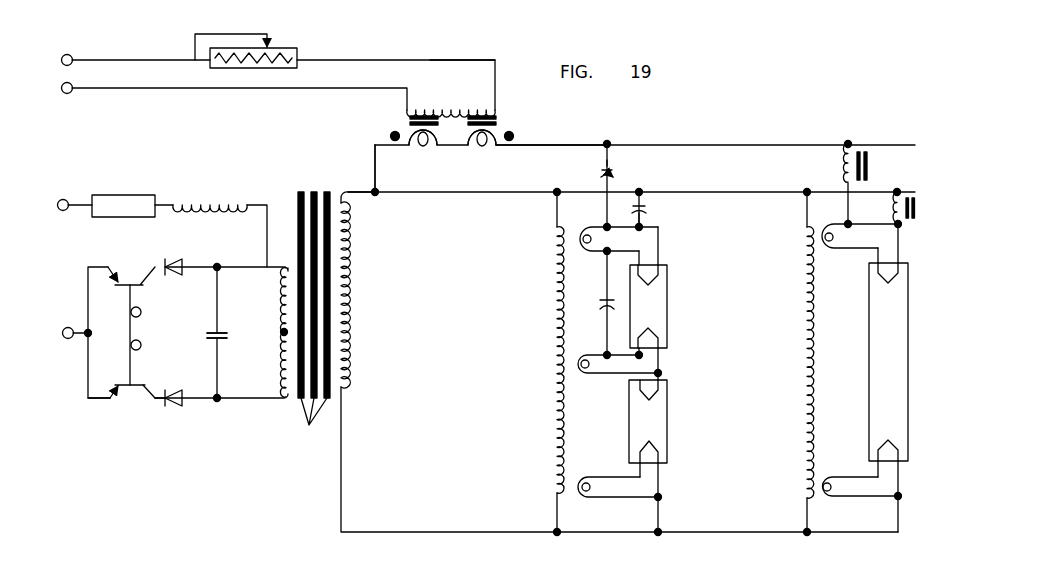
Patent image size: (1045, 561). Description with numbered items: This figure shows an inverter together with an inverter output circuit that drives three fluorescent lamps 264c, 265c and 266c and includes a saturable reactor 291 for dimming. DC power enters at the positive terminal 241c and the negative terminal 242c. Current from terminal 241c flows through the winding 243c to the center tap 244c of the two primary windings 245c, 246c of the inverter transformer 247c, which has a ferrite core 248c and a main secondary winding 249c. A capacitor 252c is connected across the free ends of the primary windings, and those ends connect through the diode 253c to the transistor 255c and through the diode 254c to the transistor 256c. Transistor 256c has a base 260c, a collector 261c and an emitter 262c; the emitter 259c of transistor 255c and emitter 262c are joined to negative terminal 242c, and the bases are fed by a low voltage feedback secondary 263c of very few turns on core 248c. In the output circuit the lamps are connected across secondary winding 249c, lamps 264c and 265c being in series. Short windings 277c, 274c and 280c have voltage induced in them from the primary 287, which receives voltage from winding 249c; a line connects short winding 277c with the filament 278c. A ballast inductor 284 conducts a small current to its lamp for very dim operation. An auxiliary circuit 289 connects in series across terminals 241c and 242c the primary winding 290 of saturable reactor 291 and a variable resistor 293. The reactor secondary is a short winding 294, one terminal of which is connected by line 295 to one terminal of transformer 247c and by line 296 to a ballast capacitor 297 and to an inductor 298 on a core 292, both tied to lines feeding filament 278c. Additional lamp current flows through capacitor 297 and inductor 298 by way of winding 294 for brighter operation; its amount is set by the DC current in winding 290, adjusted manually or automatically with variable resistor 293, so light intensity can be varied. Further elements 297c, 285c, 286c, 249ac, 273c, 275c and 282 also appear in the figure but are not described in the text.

The positive DC terminal 241c is at (70, 55).
The negative DC terminal 242c is at (70, 93).
The variable resistor 293 is at (272, 48).
The auxiliary circuit 289 is at (457, 52).
The primary winding of saturable reactor 290 is at (465, 102).
The saturable reactor 291 is at (512, 118).
The core 292 is at (517, 130).
The short winding 294 is at (481, 150).
The line 296 is at (533, 148).
The line 295 is at (377, 176).
The ballast capacitor 297 is at (614, 172).
The capacitor 297c is at (645, 206).
The ballast inductor 298 is at (845, 166).
The ballast inductor 284 is at (895, 212).
The short winding 277c is at (833, 237).
The fluorescent lamp 266c is at (869, 332).
The filament 278c is at (879, 282).
The electrode 275c is at (877, 440).
The short winding 274c is at (831, 487).
The winding 249ac is at (804, 350).
The heater 286c is at (591, 239).
The primary winding 287 is at (556, 245).
The capacitor 285c is at (600, 305).
The fluorescent lamp 264c is at (667, 312).
The electrode 273c is at (661, 392).
The fluorescent lamp 265c is at (667, 428).
The electrode 282 is at (661, 445).
The short winding 280c is at (591, 487).
The secondary winding 249c is at (350, 232).
The inverter transformer 247c is at (320, 184).
The ferrite core 248c is at (309, 426).
The primary winding 245c is at (288, 266).
The primary winding 246c is at (280, 370).
The center tap 244c is at (281, 335).
The winding 243c is at (192, 200).
The transistor 255c is at (134, 217).
The diode 253c is at (198, 252).
The emitter 259c is at (118, 270).
The capacitor 252c is at (213, 318).
The low voltage secondary 263c is at (138, 320).
The base 260c is at (138, 352).
The diode 254c is at (163, 389).
The transistor 256c is at (131, 402).
The emitter 262c is at (112, 405).
The collector 261c is at (152, 399).